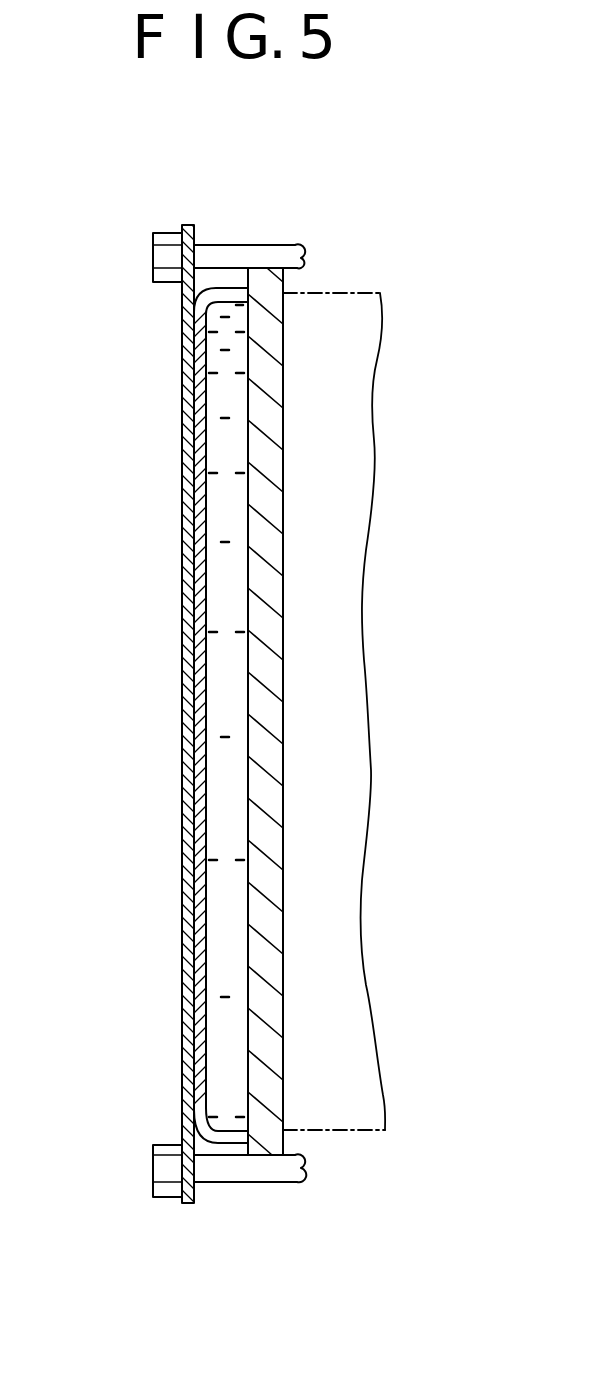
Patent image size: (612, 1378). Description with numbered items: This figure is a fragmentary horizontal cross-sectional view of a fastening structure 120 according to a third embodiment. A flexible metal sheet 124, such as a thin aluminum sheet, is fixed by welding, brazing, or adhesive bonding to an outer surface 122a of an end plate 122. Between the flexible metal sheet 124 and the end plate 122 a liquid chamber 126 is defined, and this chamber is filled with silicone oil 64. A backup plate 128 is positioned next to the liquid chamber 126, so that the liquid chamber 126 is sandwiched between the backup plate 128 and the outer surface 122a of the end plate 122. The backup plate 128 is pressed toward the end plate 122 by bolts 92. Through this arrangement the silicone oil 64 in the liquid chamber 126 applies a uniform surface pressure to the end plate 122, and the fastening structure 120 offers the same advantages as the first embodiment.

The fastening structure 120 is at (293, 210).
The bolts 92 is at (236, 247).
The end plate 122 is at (288, 348).
The outer surface 122a is at (247, 436).
The liquid chamber 126 is at (228, 596).
The silicone oil 64 is at (225, 785).
The flexible metal sheet 124 is at (205, 900).
The backup plate 128 is at (181, 722).